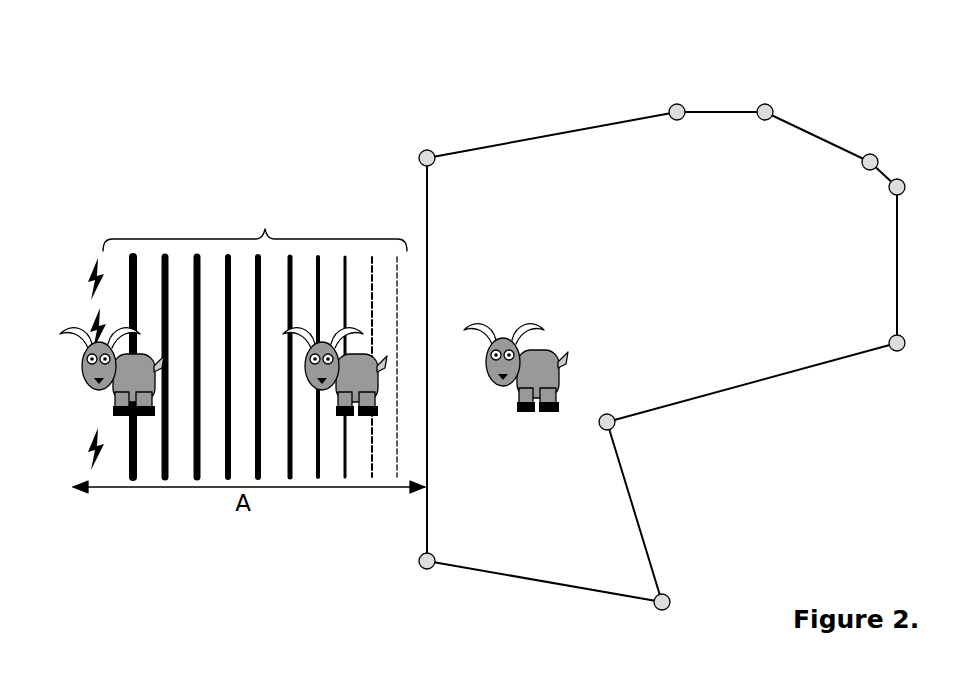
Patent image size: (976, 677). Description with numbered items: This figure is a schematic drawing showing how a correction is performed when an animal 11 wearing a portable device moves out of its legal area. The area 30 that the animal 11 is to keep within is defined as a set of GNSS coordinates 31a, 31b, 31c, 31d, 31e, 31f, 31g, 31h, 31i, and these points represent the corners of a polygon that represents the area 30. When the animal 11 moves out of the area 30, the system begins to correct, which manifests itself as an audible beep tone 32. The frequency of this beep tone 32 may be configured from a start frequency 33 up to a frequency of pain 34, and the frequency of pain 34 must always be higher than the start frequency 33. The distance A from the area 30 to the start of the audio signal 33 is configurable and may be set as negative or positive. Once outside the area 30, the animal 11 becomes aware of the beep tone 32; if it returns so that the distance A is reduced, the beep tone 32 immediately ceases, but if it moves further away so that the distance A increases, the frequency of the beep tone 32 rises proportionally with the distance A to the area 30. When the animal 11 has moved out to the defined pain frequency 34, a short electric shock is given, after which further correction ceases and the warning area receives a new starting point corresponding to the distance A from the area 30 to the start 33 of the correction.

The animal 11 is at (552, 345).
The area 30 is at (555, 185).
The GNSS coordinate 31a is at (430, 150).
The GNSS coordinate 31b is at (680, 104).
The GNSS coordinate 31c is at (768, 104).
The GNSS coordinate 31d is at (868, 154).
The GNSS coordinate 31e is at (899, 179).
The GNSS coordinate 31f is at (893, 352).
The GNSS coordinate 31g is at (615, 425).
The GNSS coordinate 31h is at (669, 596).
The GNSS coordinate 31i is at (424, 570).
The beep tone 32 is at (265, 228).
The start frequency 33 is at (408, 252).
The frequency of pain 34 is at (98, 250).